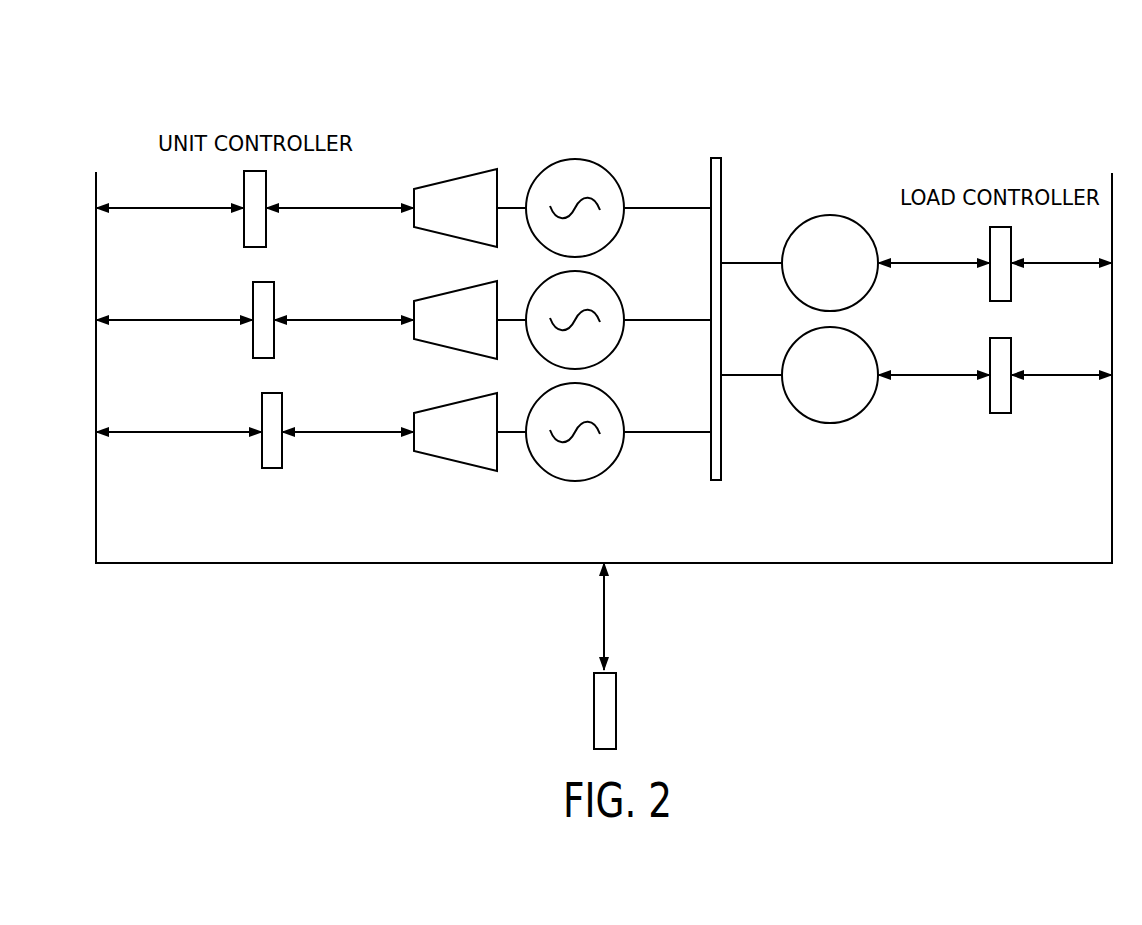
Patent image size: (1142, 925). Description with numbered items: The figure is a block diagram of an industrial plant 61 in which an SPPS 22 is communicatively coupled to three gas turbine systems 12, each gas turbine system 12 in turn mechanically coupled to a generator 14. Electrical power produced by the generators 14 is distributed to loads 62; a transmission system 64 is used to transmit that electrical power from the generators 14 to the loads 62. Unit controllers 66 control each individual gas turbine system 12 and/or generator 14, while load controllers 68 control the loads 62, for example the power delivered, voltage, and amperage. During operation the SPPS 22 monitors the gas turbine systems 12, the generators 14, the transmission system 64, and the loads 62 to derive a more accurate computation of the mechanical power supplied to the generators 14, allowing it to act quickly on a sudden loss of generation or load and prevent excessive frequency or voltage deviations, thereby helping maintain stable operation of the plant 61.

The gas turbine system 12 is at (456, 180).
The generator 14 is at (608, 175).
The SPPS 22 is at (616, 709).
The industrial plant 61 is at (749, 88).
The load 62 is at (797, 228).
The transmission system 64 is at (711, 186).
The unit controller 66 is at (266, 193).
The load controller 68 is at (1011, 243).